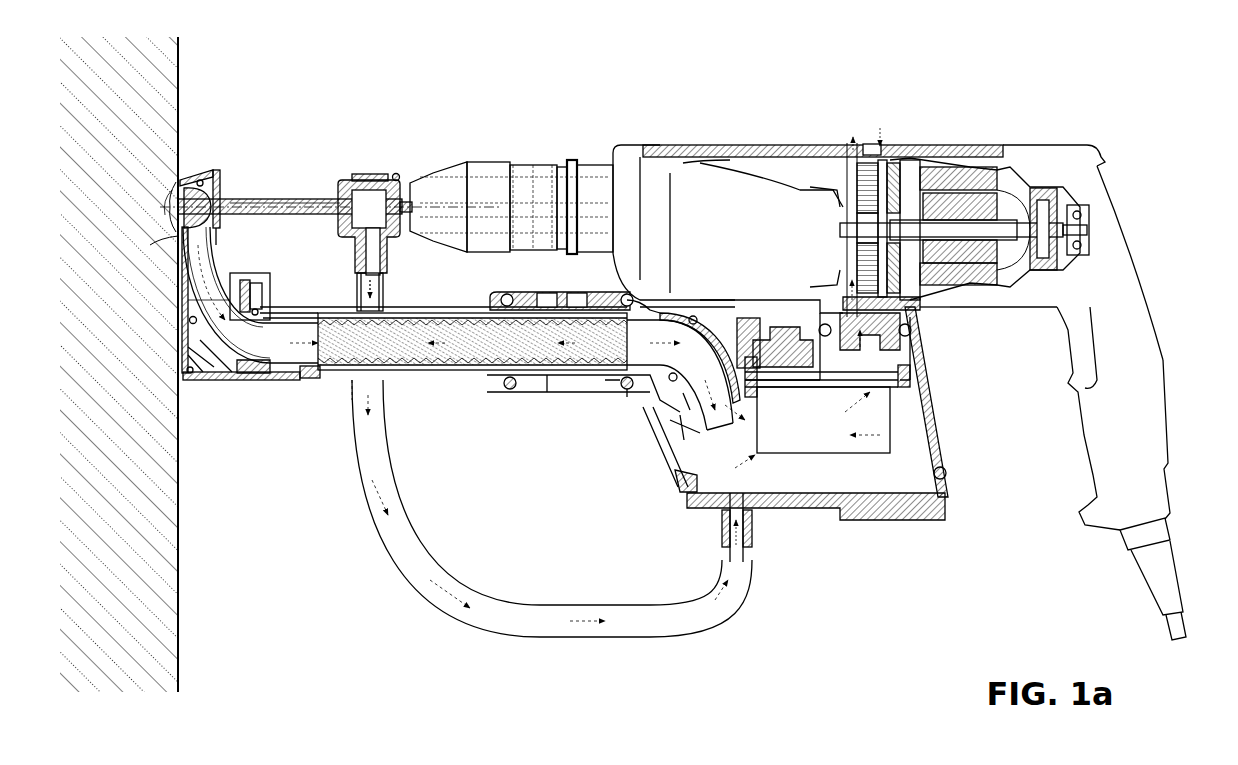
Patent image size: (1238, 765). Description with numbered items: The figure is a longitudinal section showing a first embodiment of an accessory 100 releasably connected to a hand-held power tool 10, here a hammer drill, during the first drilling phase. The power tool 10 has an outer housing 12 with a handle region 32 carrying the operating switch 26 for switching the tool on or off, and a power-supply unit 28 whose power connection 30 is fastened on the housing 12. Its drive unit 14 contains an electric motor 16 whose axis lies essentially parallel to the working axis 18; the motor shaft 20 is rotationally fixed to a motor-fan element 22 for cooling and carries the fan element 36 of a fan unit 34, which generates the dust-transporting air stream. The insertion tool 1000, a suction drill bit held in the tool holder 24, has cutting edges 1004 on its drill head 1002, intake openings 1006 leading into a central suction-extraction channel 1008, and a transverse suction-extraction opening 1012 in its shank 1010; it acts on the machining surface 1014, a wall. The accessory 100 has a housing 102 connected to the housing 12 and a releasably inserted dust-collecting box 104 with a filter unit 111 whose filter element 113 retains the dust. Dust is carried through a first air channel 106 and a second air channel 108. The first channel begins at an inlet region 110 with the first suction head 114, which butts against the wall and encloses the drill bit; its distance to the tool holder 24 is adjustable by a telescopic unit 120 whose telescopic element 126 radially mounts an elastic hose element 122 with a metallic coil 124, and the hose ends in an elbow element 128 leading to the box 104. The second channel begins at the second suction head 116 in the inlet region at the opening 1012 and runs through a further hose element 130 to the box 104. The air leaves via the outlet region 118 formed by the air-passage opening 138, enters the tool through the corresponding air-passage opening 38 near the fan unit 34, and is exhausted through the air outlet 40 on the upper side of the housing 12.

The hand-held power tool 10 is at (1110, 130).
The housing 12 is at (1101, 163).
The drive unit 14 is at (1013, 144).
The electric motor 16 is at (962, 190).
The working axis 18 is at (482, 200).
The shaft 20 is at (963, 187).
The motor-fan element 22 is at (898, 160).
The tool holder 24 is at (510, 152).
The operating switch 26 is at (1090, 360).
The power-supply unit 28 is at (1105, 540).
The power connection 30 is at (1140, 622).
The handle region 32 is at (1161, 332).
The fan unit 34 is at (873, 143).
The fan element 36 is at (822, 158).
The air-passage opening 38 is at (909, 316).
The air outlet 40 is at (855, 150).
The accessory 100 is at (662, 493).
The housing 102 is at (534, 385).
The dust-collecting box 104 is at (795, 512).
The first air channel 106 is at (277, 335).
The second air channel 108 is at (385, 295).
The inlet region 110 is at (189, 176).
The filter unit 111 is at (887, 432).
The filter element 113 is at (870, 445).
The first suction head 114 is at (227, 223).
The second suction head 116 is at (397, 173).
The outlet region 118 is at (905, 378).
The telescopic unit 120 is at (450, 381).
The hose element 122 is at (330, 378).
The metallic coil 124 is at (407, 376).
The telescopic element 126 is at (470, 330).
The elbow element 128 is at (645, 405).
The further hose element 130 is at (418, 582).
The air-passage opening 138 is at (910, 334).
The insertion tool 1000 is at (318, 196).
The drill head 1002 is at (165, 200).
The cutting edges 1004 is at (179, 182).
The intake openings 1006 is at (178, 236).
The suction-extraction channel 1008 is at (272, 197).
The shank 1010 is at (424, 199).
The suction-extraction opening 1012 is at (352, 188).
The machining surface 1014 is at (178, 73).